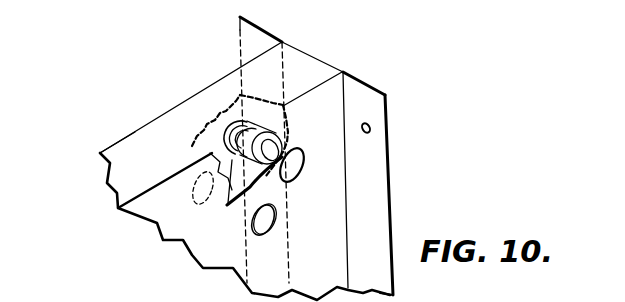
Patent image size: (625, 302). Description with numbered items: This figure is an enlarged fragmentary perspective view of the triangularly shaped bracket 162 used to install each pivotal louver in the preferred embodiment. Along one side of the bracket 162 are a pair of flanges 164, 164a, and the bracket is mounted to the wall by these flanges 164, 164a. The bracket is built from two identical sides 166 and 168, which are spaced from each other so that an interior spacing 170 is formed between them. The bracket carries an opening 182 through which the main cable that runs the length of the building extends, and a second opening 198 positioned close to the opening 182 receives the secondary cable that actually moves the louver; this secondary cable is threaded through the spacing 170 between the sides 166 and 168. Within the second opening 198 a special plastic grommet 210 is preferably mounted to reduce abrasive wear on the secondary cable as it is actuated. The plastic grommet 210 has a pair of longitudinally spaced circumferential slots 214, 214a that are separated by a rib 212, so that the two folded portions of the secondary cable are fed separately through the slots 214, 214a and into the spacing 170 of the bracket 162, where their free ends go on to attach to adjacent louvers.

The bracket 162 is at (321, 154).
The flange 164 is at (387, 147).
The flange 164a is at (253, 37).
The side 166 is at (182, 234).
The side 168 is at (180, 103).
The interior spacing 170 is at (125, 142).
The opening 182 is at (306, 148).
The second opening 198 is at (308, 112).
The plastic grommet 210 is at (235, 97).
The rib 212 is at (210, 155).
The circumferential slot 214 is at (265, 93).
The circumferential slot 214a is at (227, 196).